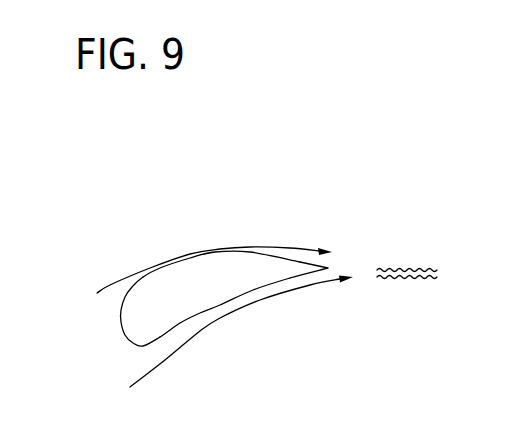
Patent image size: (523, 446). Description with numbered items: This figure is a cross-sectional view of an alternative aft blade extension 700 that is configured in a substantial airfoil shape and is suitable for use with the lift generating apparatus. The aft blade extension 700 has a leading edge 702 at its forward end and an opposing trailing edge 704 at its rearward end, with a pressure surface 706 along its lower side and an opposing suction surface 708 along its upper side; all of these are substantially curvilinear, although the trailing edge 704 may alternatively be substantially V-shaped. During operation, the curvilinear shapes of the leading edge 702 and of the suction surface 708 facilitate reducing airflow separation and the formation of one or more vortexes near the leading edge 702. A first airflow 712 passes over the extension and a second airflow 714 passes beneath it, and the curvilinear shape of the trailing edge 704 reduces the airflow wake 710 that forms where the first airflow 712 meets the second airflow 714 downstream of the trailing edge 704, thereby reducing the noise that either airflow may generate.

The aft blade extension 700 is at (168, 171).
The leading edge 702 is at (122, 329).
The trailing edge 704 is at (330, 267).
The pressure surface 706 is at (218, 305).
The suction surface 708 is at (218, 253).
The airflow wake 710 is at (396, 254).
The first airflow 712 is at (194, 279).
The second airflow 714 is at (220, 342).